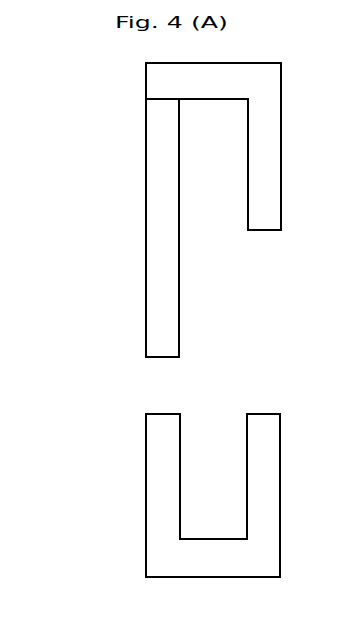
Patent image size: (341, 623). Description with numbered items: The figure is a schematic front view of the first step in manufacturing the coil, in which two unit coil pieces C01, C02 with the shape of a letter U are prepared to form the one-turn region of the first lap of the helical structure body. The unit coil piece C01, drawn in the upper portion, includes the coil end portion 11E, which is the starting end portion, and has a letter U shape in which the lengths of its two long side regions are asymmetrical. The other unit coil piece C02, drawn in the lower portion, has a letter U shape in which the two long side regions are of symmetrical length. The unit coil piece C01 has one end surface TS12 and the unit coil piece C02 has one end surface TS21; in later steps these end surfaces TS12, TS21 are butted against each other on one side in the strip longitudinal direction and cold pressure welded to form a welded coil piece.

The unit coil piece C01 is at (146, 255).
The unit coil piece C02 is at (145, 483).
The coil end portion 11E is at (144, 357).
The end surface TS12 is at (272, 230).
The end surface TS21 is at (259, 414).